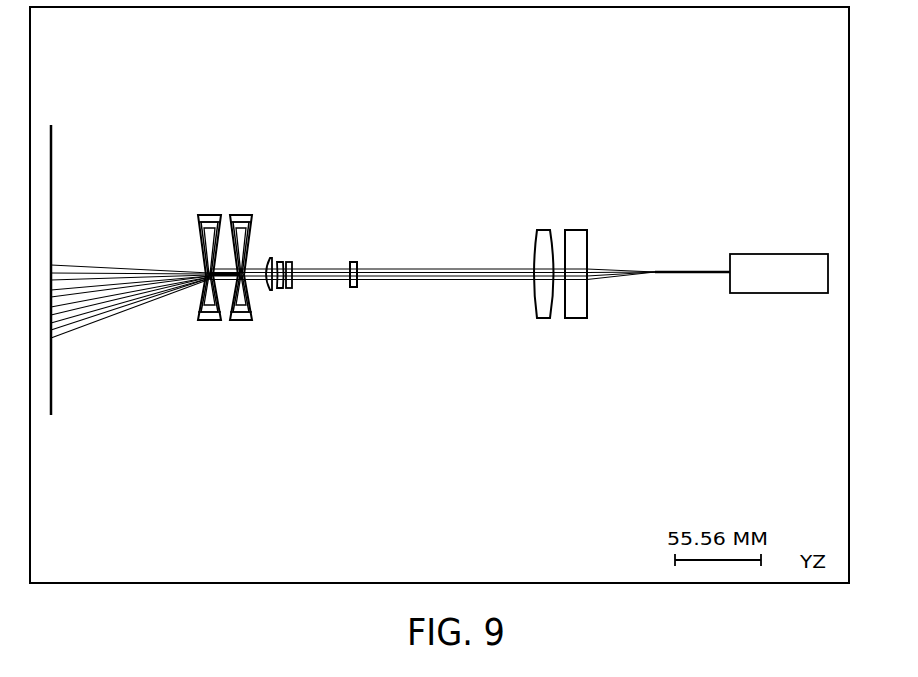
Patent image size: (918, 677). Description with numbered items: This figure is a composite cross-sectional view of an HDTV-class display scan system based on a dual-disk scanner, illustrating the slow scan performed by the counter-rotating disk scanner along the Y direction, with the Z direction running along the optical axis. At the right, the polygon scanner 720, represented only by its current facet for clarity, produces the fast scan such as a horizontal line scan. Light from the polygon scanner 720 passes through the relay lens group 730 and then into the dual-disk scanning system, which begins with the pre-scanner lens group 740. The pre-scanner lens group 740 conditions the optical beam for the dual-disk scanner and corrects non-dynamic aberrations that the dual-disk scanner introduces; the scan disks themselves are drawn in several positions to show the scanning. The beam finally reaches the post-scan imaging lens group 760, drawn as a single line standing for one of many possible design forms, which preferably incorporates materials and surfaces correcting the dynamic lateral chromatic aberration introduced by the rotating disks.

The post-scan imaging lens group 760 is at (51, 190).
The pre-scanner lens group 740 is at (305, 297).
The relay lens group 730 is at (603, 327).
The polygon scanner 720 is at (778, 293).